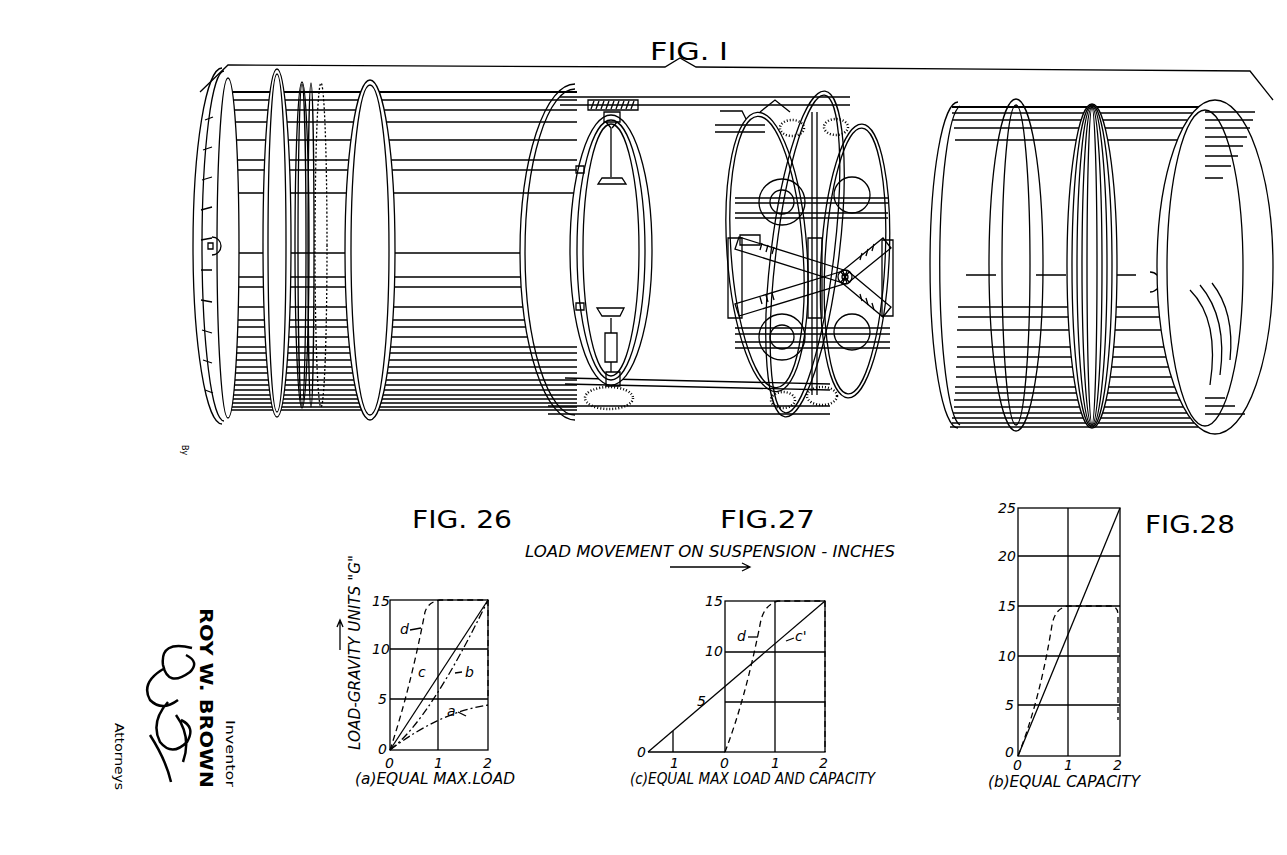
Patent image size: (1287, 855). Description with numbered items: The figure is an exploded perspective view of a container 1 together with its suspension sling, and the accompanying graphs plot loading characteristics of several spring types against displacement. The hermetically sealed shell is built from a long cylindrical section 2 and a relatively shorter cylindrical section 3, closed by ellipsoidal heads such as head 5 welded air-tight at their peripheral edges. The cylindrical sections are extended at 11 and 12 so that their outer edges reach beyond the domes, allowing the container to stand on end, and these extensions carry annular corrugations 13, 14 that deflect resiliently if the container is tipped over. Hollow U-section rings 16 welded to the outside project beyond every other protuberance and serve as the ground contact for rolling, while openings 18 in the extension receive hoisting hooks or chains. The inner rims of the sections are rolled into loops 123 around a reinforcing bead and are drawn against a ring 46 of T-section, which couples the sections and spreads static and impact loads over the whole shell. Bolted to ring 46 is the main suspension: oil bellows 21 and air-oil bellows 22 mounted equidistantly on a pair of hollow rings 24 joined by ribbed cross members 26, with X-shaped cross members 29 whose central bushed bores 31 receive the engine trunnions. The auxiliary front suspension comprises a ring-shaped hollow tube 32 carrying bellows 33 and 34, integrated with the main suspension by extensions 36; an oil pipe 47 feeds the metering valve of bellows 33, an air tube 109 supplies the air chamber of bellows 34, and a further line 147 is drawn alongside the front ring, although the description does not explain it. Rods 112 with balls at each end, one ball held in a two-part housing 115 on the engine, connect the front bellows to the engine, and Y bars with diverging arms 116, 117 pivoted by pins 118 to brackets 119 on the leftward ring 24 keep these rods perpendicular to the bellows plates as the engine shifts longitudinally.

The container 1 is at (187, 375).
The cylindrical section 2 is at (487, 416).
The cylindrical section 3 is at (1085, 436).
The ellipsoidal head 5 is at (1222, 306).
The extension 11 is at (312, 88).
The extension 12 is at (1255, 343).
The annular corrugations 13 is at (330, 82).
The annular corrugations 14 is at (1115, 104).
The hollow rings 16 is at (283, 78).
The openings 18 is at (214, 238).
The bellows 21 is at (845, 126).
The bellows 22 is at (822, 96).
The rings 24 is at (745, 176).
The cross members 26 is at (745, 208).
The X-shaped cross members 29 is at (887, 258).
The central bushed bore 31 is at (810, 275).
The ring-shaped hollow tube 32 is at (650, 220).
The bellows 33 is at (636, 100).
The bellows 34 is at (592, 396).
The extensions 36 is at (719, 100).
The ring of T-section 46 is at (806, 432).
The oil pipe 47 is at (750, 240).
The air tube 109 is at (623, 120).
The rod 112 is at (618, 165).
The two-part housing 115 is at (634, 184).
The arm 116 is at (716, 393).
The arm 117 is at (722, 125).
The pins 118 is at (762, 132).
The brackets 119 is at (772, 102).
The loop 123 is at (530, 378).
The cable 147 is at (775, 248).